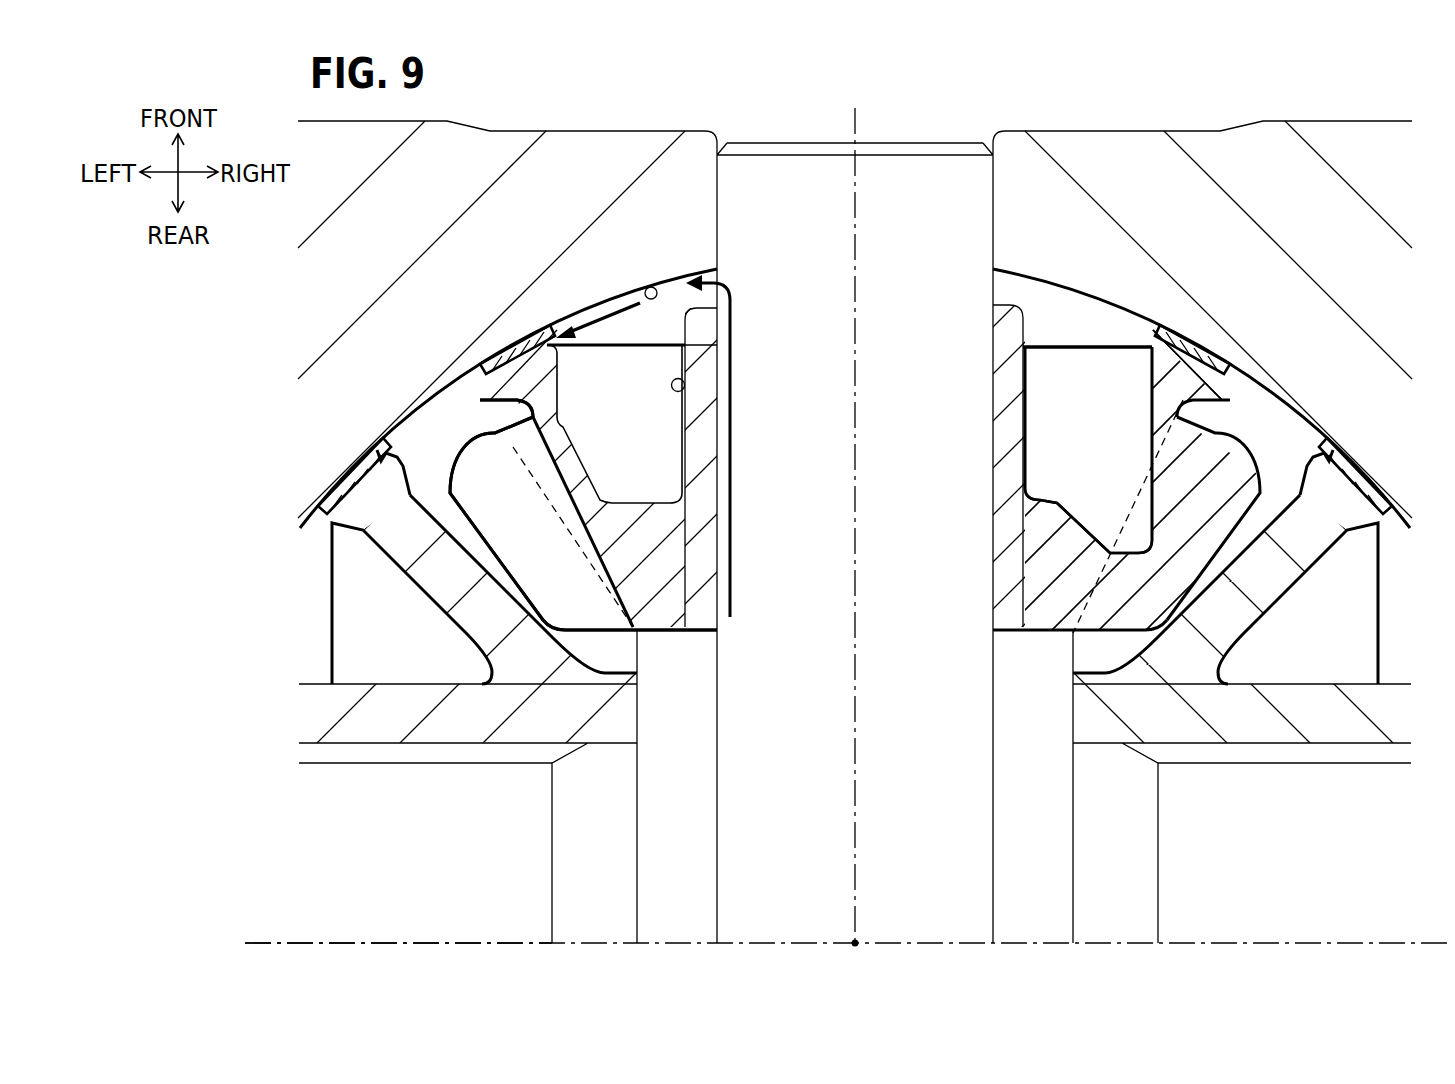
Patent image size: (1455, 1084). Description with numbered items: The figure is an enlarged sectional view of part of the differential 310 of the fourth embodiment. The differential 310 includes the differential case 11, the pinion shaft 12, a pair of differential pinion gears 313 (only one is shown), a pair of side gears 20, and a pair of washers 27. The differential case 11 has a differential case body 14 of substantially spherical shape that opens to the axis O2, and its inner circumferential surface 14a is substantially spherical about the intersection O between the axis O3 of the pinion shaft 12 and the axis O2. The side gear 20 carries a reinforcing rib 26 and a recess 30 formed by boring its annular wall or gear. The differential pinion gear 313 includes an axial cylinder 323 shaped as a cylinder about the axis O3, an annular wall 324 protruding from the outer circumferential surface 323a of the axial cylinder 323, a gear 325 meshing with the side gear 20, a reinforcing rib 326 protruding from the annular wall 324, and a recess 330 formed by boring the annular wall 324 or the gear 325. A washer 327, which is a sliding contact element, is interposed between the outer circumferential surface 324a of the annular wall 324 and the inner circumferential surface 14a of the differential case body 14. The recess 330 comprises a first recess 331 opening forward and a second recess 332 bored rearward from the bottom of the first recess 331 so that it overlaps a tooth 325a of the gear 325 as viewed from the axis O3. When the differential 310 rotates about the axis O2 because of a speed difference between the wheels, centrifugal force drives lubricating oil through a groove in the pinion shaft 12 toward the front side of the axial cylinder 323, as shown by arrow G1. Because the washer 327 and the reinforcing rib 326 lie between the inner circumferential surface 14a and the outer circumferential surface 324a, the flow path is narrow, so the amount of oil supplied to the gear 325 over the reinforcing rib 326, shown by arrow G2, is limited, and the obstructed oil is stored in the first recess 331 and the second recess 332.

The differential case 11 is at (583, 148).
The pinion shaft 12 is at (790, 172).
The differential case body 14 is at (421, 226).
The inner circumferential surface 14a is at (654, 287).
The side gear 20 is at (645, 708).
The reinforcing rib 26 is at (375, 452).
The washer 27 is at (338, 472).
The recess 30 is at (375, 642).
The differential 310 is at (1110, 110).
The differential pinion gear 313 is at (1012, 298).
The axial cylinder 323 is at (700, 477).
The outer circumferential surface 323a is at (685, 390).
The annular wall 324 is at (650, 533).
The outer circumferential surface 324a is at (507, 340).
The gear 325 is at (470, 460).
The tooth 325a is at (583, 515).
The reinforcing rib 326 is at (1243, 380).
The washer 327 is at (1193, 330).
The recess 330 is at (1083, 388).
The first recess 331 is at (1141, 480).
The second recess 332 is at (1110, 522).
The arrow G1 is at (735, 288).
The arrow G2 is at (598, 303).
The intersection O is at (858, 940).
The axis O2 is at (430, 943).
The axis O3 is at (857, 130).